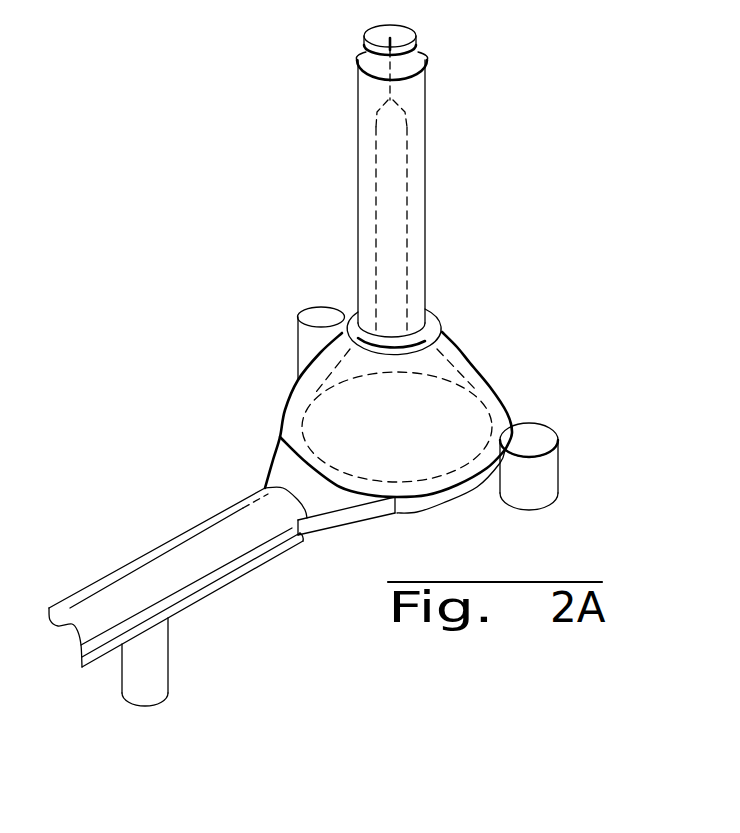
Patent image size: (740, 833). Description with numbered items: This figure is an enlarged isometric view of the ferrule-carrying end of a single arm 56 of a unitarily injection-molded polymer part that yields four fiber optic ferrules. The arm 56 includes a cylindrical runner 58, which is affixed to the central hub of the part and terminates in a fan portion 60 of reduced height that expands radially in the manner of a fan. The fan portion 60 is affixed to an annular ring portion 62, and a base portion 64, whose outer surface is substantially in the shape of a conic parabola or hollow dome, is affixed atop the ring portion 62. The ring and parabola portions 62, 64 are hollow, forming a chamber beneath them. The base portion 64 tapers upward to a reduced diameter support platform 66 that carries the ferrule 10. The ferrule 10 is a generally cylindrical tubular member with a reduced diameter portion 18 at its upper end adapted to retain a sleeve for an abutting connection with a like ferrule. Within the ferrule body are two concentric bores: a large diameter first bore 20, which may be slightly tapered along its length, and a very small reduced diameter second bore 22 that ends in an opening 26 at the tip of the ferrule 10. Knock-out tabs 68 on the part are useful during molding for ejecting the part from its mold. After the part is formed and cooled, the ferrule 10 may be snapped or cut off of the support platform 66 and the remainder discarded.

The ferrule 10 is at (420, 190).
The reduced diameter portion 18 is at (418, 50).
The first bore 20 is at (407, 258).
The second bore 22 is at (383, 107).
The opening 26 is at (390, 37).
The arm 56 is at (157, 548).
The cylindrical runner 58 is at (217, 585).
The fan portion 60 is at (295, 473).
The annular ring portion 62 is at (453, 493).
The base portion 64 is at (482, 380).
The support platform 66 is at (430, 318).
The knock-out tab 68 is at (552, 463).